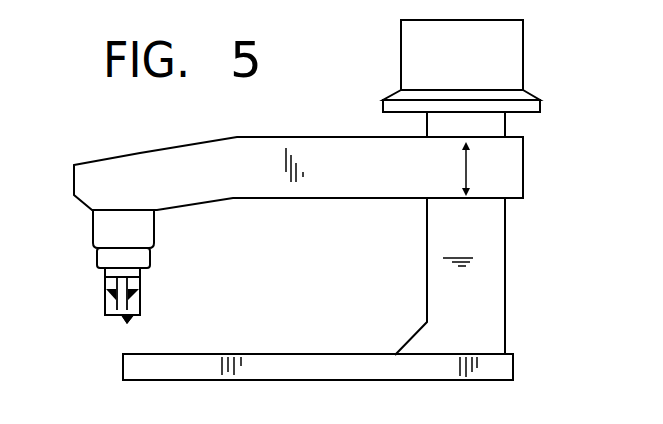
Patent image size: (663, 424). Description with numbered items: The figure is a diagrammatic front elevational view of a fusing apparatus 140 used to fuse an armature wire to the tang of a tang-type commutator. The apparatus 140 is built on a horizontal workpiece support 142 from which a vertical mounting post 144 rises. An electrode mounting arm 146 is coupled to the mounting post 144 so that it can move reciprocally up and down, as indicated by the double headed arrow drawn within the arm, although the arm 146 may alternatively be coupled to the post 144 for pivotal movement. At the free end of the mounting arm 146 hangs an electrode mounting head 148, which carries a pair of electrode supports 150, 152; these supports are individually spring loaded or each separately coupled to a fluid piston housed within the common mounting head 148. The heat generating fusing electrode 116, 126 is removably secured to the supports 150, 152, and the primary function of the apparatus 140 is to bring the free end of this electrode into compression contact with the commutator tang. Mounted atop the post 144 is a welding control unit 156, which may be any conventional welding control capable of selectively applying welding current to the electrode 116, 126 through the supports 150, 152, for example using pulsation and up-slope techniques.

The fusing electrode 116 is at (133, 318).
The workpiece / component 126 is at (133, 318).
The fusing apparatus 140 is at (509, 294).
The horizontal workpiece support 142 is at (123, 367).
The vertical mounting post 144 is at (488, 243).
The electrode mounting arm 146 is at (507, 172).
The electrode mounting head 148 is at (150, 258).
The electrode support 150 is at (108, 282).
The electrode support 152 is at (135, 285).
The welding control unit 156 is at (507, 53).